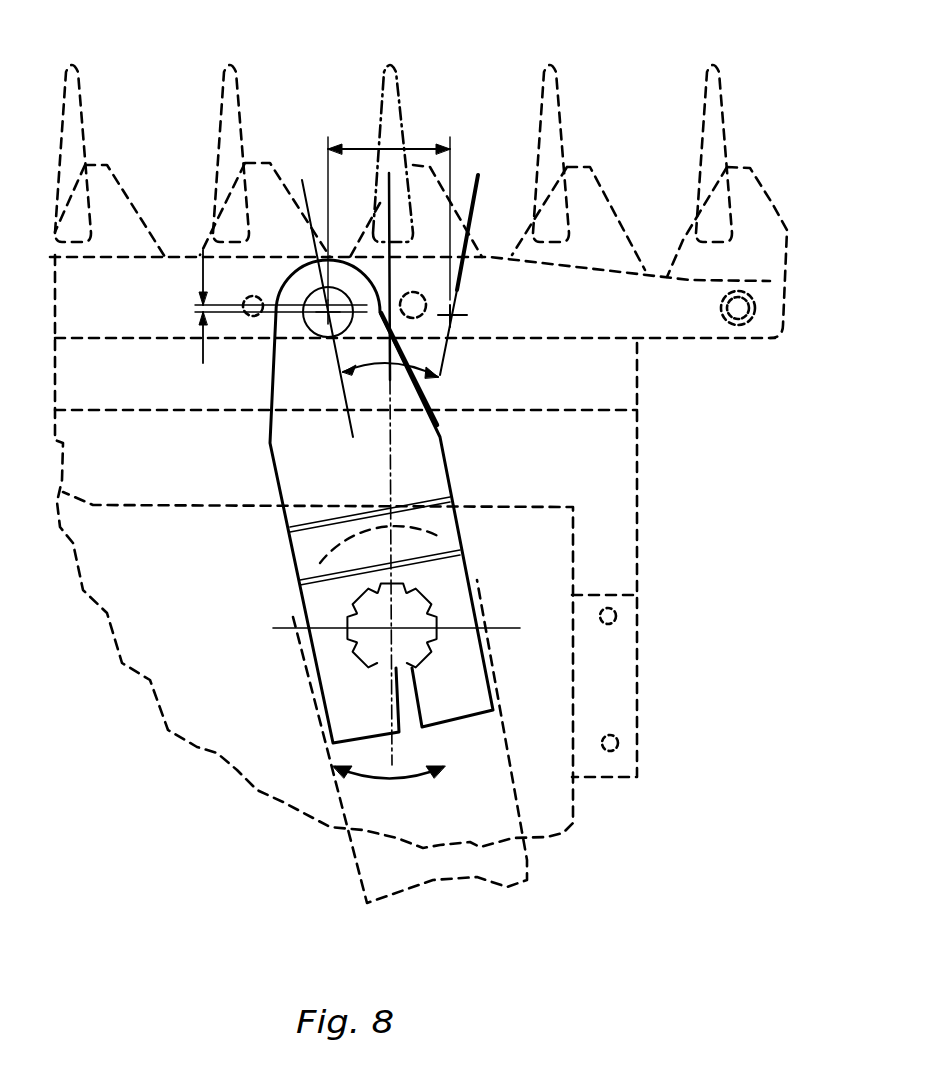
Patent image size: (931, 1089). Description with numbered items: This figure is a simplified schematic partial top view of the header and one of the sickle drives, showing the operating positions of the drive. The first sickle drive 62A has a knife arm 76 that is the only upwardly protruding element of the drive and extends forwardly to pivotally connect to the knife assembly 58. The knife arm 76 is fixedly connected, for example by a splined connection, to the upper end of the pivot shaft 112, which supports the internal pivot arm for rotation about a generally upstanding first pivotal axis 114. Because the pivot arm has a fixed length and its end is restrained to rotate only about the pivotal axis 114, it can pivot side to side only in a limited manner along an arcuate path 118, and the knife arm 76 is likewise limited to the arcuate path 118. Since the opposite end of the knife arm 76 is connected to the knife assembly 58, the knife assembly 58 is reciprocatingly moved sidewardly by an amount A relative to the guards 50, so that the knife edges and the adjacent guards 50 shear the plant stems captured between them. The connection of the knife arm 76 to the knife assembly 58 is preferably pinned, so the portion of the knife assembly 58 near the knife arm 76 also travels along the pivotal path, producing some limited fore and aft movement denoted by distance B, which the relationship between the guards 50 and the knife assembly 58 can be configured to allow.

The guards 50 is at (230, 64).
The knife assembly 58 is at (772, 203).
The first sickle drive 62A is at (441, 436).
The knife arm 76 is at (448, 478).
The pivot shaft 112 is at (360, 643).
The first pivotal axis 114 is at (393, 628).
The arcuate path 118 is at (368, 780).
The amount of sideward movement A is at (417, 147).
The fore and aft movement distance B is at (203, 275).